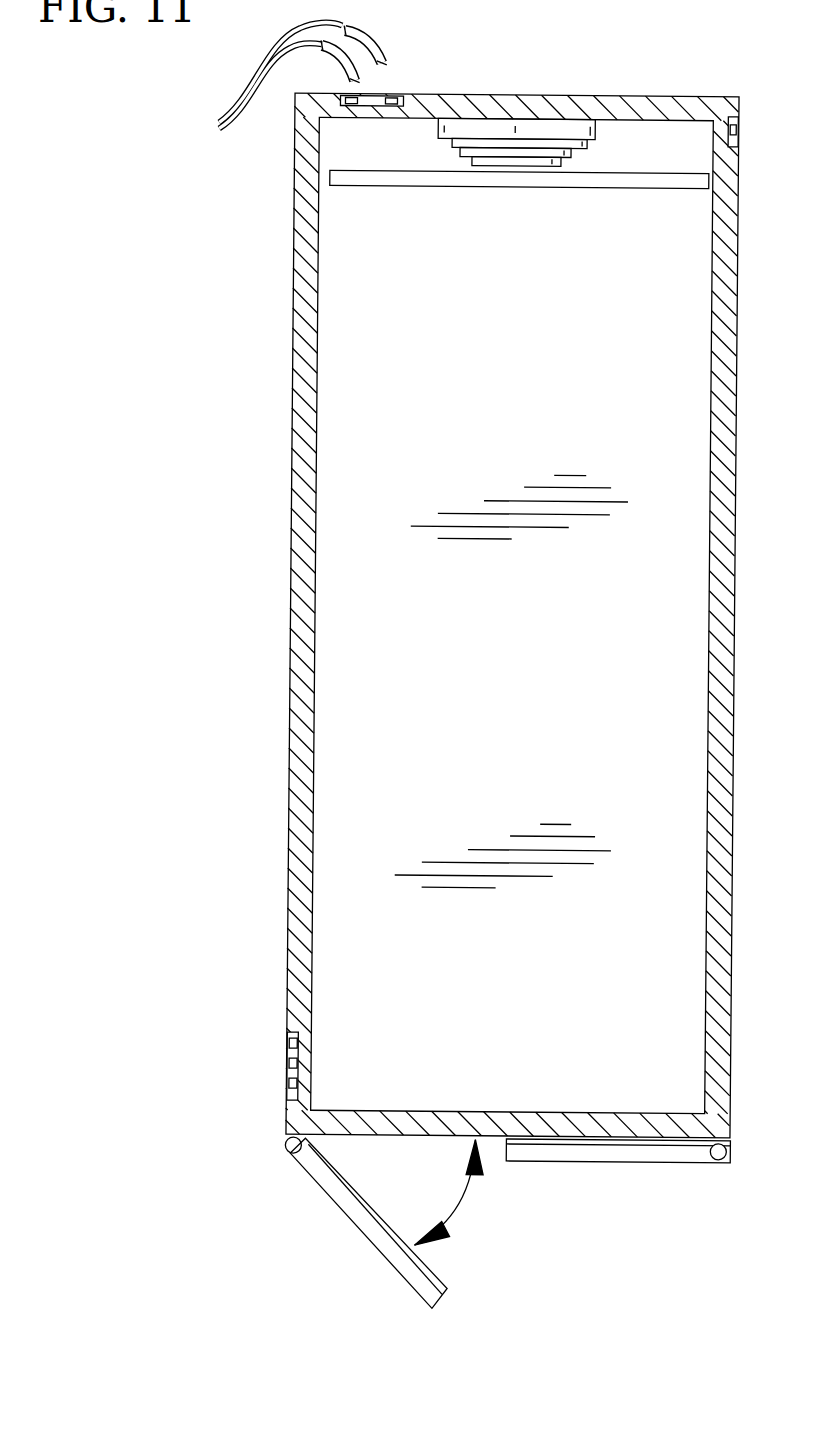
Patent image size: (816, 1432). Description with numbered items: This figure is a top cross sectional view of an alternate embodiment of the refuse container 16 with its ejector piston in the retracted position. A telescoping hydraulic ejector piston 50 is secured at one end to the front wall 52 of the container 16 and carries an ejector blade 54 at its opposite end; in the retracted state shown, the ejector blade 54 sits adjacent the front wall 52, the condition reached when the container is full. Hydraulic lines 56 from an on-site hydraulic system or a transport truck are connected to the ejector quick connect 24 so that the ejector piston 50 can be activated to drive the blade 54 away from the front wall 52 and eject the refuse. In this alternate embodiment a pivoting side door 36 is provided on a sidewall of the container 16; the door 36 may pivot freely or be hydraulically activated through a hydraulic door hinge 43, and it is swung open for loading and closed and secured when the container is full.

The container 16 is at (289, 715).
The hydraulic quick-connect 24 is at (395, 96).
The pivoting door 36 is at (578, 1161).
The hydraulic door hinge 43 is at (288, 1150).
The telescoping hydraulic ejector piston 50 is at (429, 144).
The front wall 52 is at (662, 98).
The ejector blade 54 is at (473, 188).
The hydraulic lines 56 is at (287, 80).